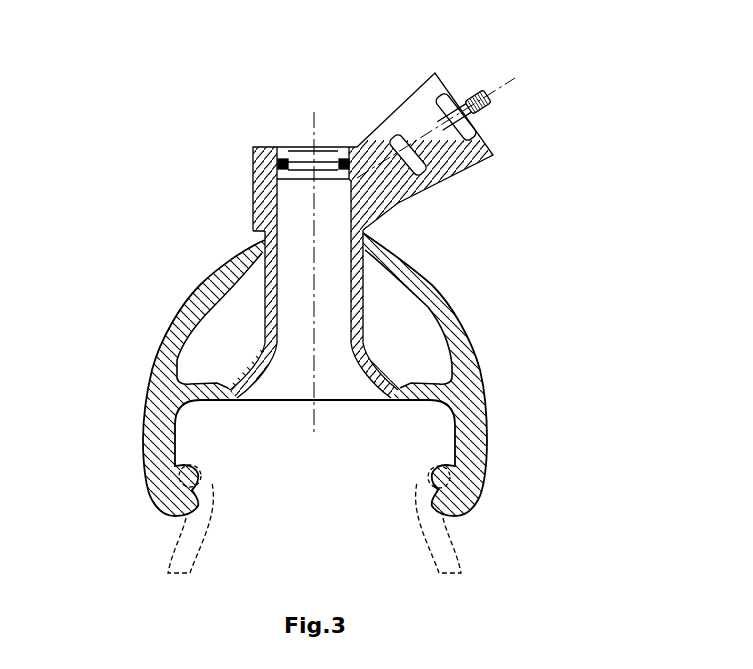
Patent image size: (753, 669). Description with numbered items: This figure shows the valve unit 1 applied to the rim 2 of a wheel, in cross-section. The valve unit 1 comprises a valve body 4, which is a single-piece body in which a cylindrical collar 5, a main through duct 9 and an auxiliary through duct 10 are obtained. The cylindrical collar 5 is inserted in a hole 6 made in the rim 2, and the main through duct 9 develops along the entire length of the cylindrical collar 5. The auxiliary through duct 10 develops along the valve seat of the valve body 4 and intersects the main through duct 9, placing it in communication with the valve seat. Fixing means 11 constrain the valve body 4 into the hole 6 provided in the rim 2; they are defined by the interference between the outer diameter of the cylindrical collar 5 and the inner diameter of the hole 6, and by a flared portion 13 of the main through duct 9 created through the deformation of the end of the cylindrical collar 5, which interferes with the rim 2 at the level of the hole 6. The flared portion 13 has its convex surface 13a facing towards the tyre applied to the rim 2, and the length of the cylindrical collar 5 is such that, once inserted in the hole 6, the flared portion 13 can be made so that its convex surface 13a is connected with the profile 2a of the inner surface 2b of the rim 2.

The valve unit 1 is at (210, 113).
The rim 2 is at (465, 391).
The profile of the inner surface of the rim 2a is at (240, 375).
The inner surface of the rim 2b is at (212, 408).
The valve body 4 is at (260, 177).
The cylindrical collar 5 is at (358, 253).
The hole 6 is at (257, 243).
The main through duct 9 is at (297, 283).
The auxiliary through duct 10 is at (380, 168).
The fixing means 11 is at (380, 378).
The flared portion 13 is at (375, 398).
The convex surface 13a is at (373, 385).